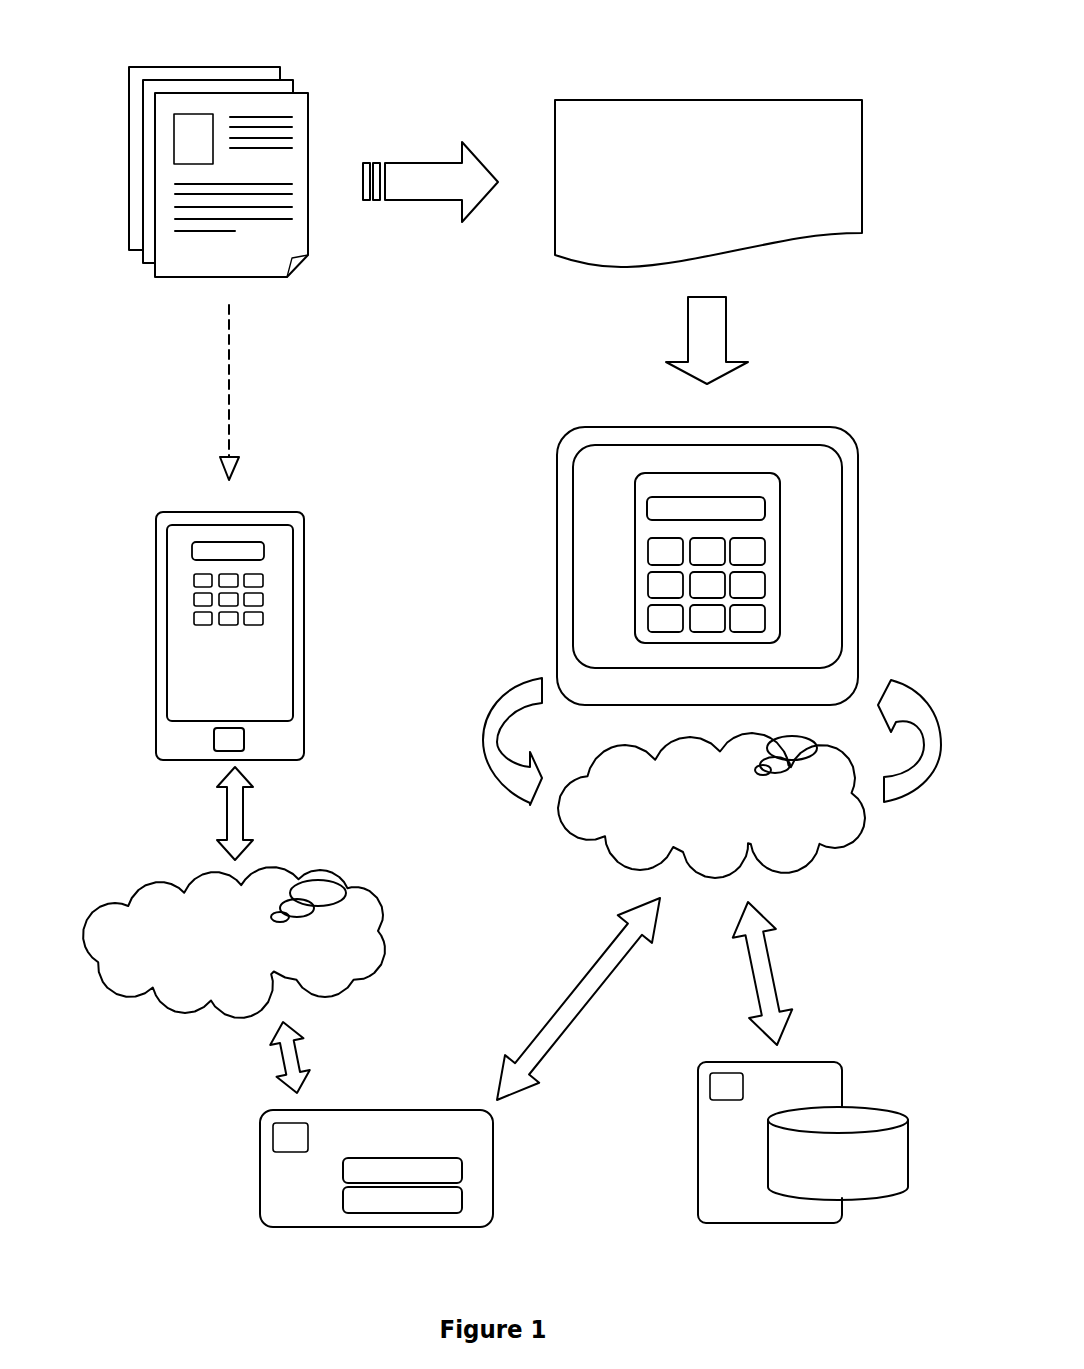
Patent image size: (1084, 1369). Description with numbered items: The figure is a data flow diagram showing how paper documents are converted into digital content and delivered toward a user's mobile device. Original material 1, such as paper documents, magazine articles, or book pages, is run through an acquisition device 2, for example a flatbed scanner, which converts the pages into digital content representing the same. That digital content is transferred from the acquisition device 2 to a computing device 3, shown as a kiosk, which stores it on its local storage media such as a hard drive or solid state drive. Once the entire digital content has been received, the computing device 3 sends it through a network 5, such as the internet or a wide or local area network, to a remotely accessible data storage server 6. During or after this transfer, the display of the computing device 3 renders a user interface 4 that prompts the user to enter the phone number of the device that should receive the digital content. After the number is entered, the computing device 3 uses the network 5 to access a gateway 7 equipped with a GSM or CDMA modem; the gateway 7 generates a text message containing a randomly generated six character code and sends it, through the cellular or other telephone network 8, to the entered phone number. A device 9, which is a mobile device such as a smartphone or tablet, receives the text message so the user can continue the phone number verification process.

The original material 1 is at (344, 43).
The acquisition device 2 is at (866, 58).
The computing device 3 is at (859, 393).
The user interface 4 is at (532, 401).
The network 5 is at (875, 843).
The data storage server 6 is at (874, 1026).
The gateway 7 is at (558, 1196).
The telephone network 8 is at (131, 1045).
The device 9 is at (124, 470).